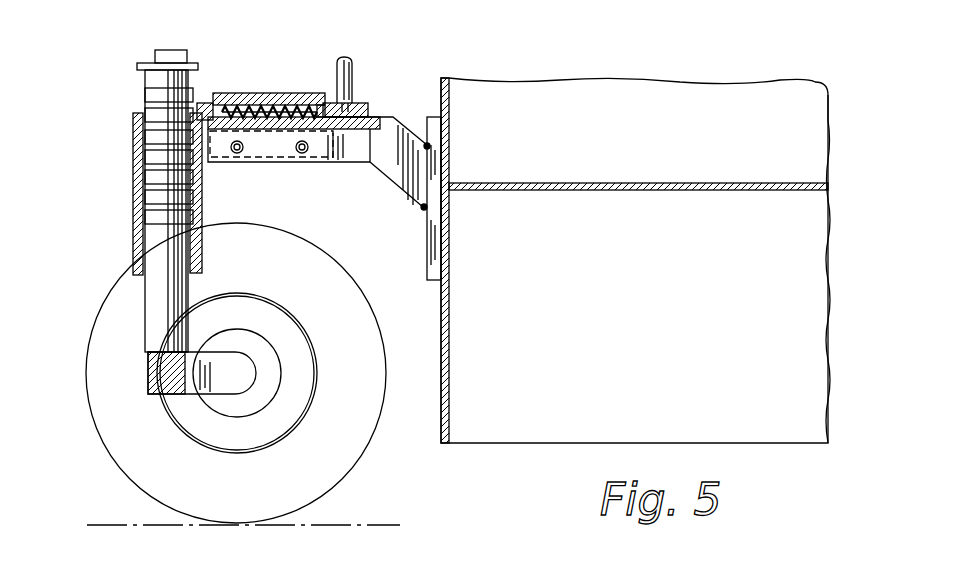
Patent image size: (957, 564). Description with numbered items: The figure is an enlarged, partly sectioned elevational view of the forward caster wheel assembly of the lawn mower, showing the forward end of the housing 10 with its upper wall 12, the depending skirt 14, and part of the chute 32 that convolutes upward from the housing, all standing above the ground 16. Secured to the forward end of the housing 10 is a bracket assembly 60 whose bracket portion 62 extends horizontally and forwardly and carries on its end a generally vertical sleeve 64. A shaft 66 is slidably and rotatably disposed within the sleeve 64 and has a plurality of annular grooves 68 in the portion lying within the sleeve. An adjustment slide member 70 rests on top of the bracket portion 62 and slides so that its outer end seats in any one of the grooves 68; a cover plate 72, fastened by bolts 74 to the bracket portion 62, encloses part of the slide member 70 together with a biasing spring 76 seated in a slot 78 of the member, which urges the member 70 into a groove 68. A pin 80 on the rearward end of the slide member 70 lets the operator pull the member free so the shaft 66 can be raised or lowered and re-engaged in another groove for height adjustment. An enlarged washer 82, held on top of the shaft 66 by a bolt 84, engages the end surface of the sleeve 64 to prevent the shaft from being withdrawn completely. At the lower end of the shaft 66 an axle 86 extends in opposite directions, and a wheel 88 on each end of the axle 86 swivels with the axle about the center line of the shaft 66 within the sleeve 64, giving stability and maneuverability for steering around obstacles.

The housing 10 is at (525, 445).
The upper wall 12 is at (640, 186).
The skirt 14 is at (440, 312).
The ground 16 is at (365, 525).
The chute 32 is at (682, 82).
The bracket assembly 60 is at (393, 117).
The bracket portion 62 is at (358, 160).
The sleeve 64 is at (133, 118).
The shaft 66 is at (147, 304).
The annular grooves 68 is at (147, 198).
The adjustment slide member 70 is at (205, 112).
The cover plate 72 is at (258, 93).
The bolts 74 is at (302, 154).
The biasing spring 76 is at (284, 118).
The slot 78 is at (272, 122).
The pin 80 is at (352, 72).
The washer 82 is at (140, 63).
The bolt 84 is at (170, 52).
The axle 86 is at (222, 388).
The wheel 88 is at (112, 447).